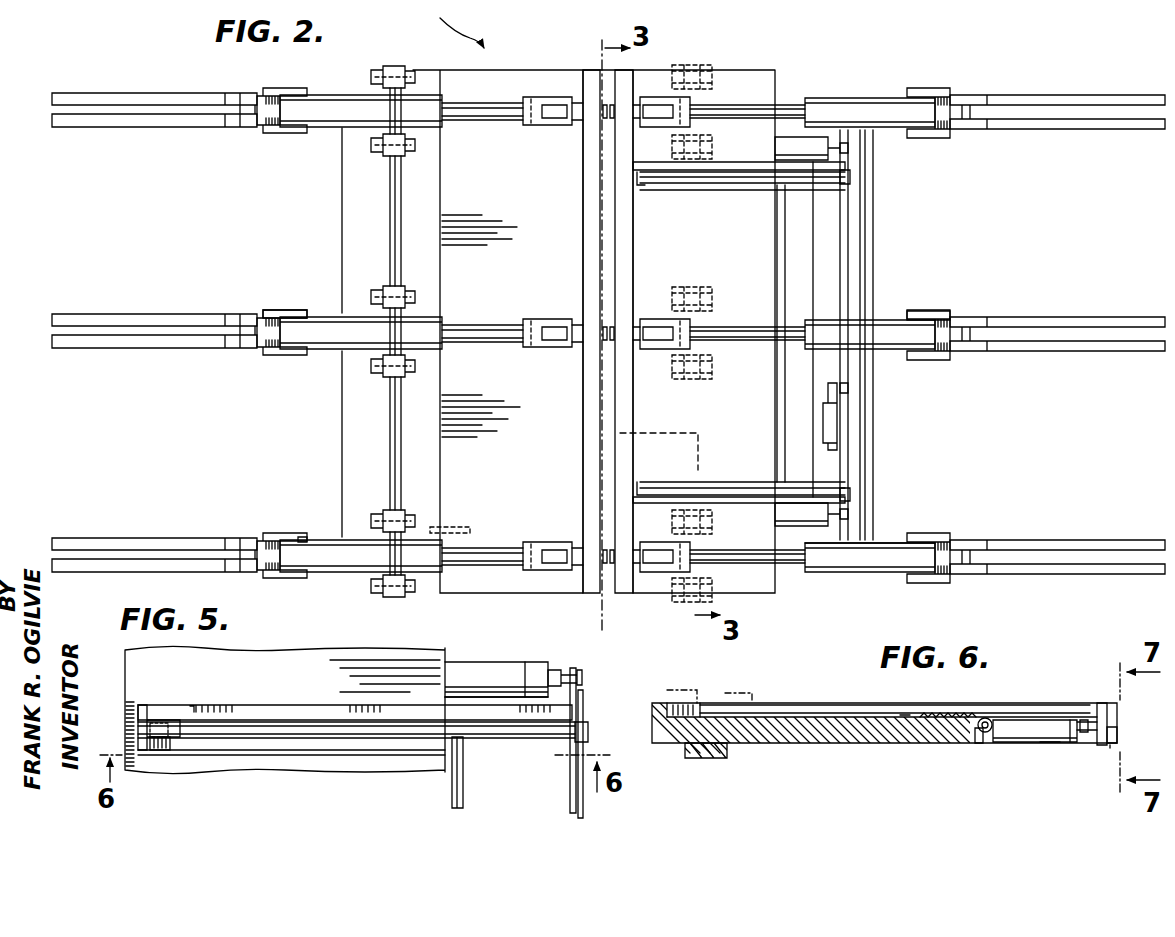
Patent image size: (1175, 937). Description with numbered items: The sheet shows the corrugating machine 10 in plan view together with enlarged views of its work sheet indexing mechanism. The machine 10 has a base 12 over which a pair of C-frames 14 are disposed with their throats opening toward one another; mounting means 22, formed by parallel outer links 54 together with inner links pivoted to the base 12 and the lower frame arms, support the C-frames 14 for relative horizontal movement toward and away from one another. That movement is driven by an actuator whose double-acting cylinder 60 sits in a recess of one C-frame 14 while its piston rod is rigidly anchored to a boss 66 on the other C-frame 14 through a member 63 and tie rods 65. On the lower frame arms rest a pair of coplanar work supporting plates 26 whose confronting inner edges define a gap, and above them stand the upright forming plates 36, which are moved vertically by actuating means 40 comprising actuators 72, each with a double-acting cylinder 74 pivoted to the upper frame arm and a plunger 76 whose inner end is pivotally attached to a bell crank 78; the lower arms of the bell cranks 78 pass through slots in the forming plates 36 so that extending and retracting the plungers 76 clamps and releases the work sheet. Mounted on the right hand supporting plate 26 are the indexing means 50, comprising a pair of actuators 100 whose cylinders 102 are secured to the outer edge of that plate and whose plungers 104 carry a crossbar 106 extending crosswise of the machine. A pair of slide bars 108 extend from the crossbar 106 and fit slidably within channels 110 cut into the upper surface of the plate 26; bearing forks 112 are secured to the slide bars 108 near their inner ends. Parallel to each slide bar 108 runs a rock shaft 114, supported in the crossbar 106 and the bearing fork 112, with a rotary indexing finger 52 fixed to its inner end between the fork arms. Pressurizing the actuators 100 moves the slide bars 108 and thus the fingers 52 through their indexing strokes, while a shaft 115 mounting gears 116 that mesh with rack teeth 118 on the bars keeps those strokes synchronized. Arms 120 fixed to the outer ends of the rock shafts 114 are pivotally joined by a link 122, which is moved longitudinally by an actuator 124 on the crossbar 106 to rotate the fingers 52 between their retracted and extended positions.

In FIG. 2, the corrugating machine 10 is at (448, 30).
In FIG. 2, the base 12 is at (340, 228).
In FIG. 2, the C-frames 14 is at (165, 92).
In FIG. 2, the mounting means 22 is at (302, 532).
In FIG. 2, the work supporting plates 26 is at (594, 331).
In FIG. 5, the work supporting plates 26 is at (305, 660).
In FIG. 6, the work supporting plates 26 is at (800, 738).
In FIG. 2, the forming plates 36 is at (634, 270).
In FIG. 2, the actuating means 40 is at (886, 97).
In FIG. 5, the work sheet indexing means 50 is at (535, 661).
In FIG. 6, the work sheet indexing means 50 is at (1040, 752).
In FIG. 5, the indexing finger 52 is at (160, 750).
In FIG. 6, the indexing finger 52 is at (687, 690).
In FIG. 2, the outer links 54 is at (280, 88).
In FIG. 2, the double-acting cylinder 60 is at (478, 525).
In FIG. 2, the member 63 is at (388, 148).
In FIG. 2, the tie rods 65 is at (433, 144).
In FIG. 2, the boss 66 is at (690, 70).
In FIG. 2, the actuators 72 is at (350, 58).
In FIG. 2, the double-acting cylinder 74 is at (332, 113).
In FIG. 2, the plunger 76 is at (482, 110).
In FIG. 2, the bell cranks 78 is at (555, 112).
In FIG. 2, the actuators 100 is at (792, 146).
In FIG. 5, the actuators 100 is at (486, 675).
In FIG. 6, the actuators 100 is at (1029, 740).
In FIG. 5, the cylinder 102 is at (533, 672).
In FIG. 6, the cylinder 102 is at (1017, 724).
In FIG. 5, the plunger 104 is at (560, 683).
In FIG. 6, the plunger 104 is at (1088, 720).
In FIG. 2, the crossbar 106 is at (833, 260).
In FIG. 5, the crossbar 106 is at (573, 702).
In FIG. 6, the crossbar 106 is at (1100, 740).
In FIG. 2, the slide bars 108 is at (760, 150).
In FIG. 5, the slide bars 108 is at (292, 680).
In FIG. 6, the slide bars 108 is at (900, 717).
In FIG. 2, the channels 110 is at (662, 185).
In FIG. 5, the channels 110 is at (306, 756).
In FIG. 5, the bearing forks 112 is at (174, 720).
In FIG. 6, the bearing forks 112 is at (674, 704).
In FIG. 2, the rock shaft 114 is at (710, 185).
In FIG. 5, the rock shaft 114 is at (235, 739).
In FIG. 6, the rock shaft 114 is at (872, 682).
In FIG. 2, the shaft 115 is at (778, 245).
In FIG. 5, the shaft 115 is at (460, 790).
In FIG. 6, the shaft 115 is at (982, 742).
In FIG. 2, the gears 116 is at (598, 452).
In FIG. 6, the rack teeth 118 is at (960, 718).
In FIG. 2, the arms 120 is at (850, 180).
In FIG. 5, the arms 120 is at (588, 734).
In FIG. 6, the arms 120 is at (1115, 720).
In FIG. 2, the link 122 is at (846, 222).
In FIG. 5, the link 122 is at (586, 806).
In FIG. 6, the link 122 is at (1110, 747).
In FIG. 2, the actuator 124 is at (833, 417).